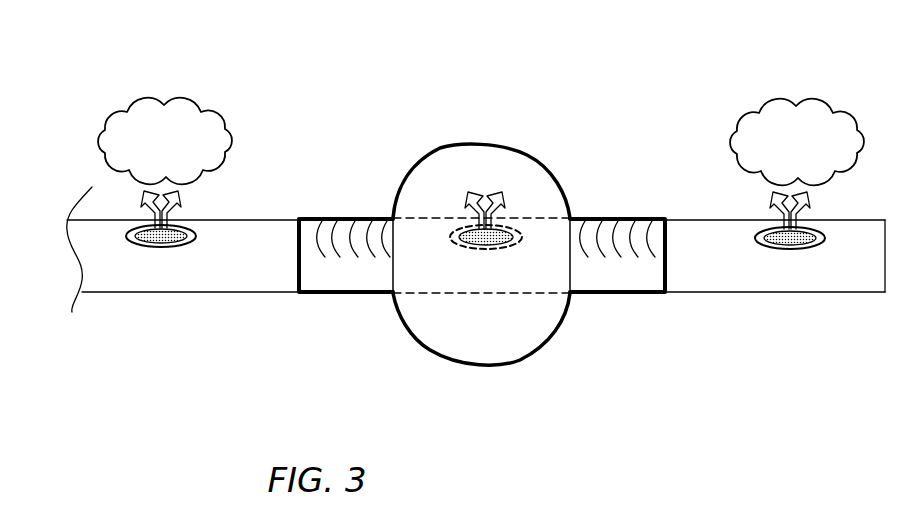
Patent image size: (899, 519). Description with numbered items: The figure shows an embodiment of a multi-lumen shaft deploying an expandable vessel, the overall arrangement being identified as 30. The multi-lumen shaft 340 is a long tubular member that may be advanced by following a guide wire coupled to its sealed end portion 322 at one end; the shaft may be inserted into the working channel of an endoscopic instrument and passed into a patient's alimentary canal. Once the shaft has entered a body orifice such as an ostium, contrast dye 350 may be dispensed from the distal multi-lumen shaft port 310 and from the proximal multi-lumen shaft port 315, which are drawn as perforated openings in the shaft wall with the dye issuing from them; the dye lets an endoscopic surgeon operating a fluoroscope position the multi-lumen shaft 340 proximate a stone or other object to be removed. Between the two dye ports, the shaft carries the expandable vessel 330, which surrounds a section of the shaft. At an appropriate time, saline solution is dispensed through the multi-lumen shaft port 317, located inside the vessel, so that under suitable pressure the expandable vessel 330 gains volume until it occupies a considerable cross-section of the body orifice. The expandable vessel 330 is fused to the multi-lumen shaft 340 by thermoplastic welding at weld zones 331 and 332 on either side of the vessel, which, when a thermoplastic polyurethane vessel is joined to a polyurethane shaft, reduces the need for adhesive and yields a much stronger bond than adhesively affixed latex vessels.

The heating system 30 is at (148, 43).
The distal multi-lumen shaft port 310 is at (778, 248).
The proximal multi-lumen shaft port 315 is at (163, 248).
The multi-lumen shaft port 317 is at (456, 244).
The sealed end portion 322 is at (885, 247).
The expandable vessel 330 is at (512, 150).
The weld zone 331 is at (357, 242).
The weld zone 332 is at (612, 237).
The multi-lumen shaft 340 is at (240, 293).
The contrast dye 350 is at (481, 142).